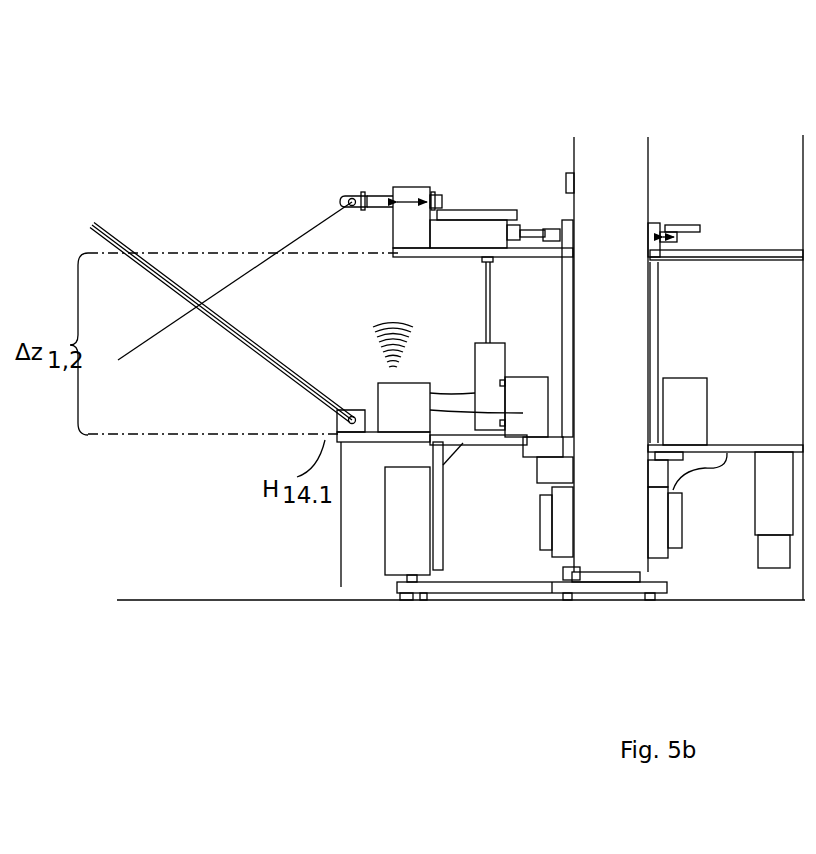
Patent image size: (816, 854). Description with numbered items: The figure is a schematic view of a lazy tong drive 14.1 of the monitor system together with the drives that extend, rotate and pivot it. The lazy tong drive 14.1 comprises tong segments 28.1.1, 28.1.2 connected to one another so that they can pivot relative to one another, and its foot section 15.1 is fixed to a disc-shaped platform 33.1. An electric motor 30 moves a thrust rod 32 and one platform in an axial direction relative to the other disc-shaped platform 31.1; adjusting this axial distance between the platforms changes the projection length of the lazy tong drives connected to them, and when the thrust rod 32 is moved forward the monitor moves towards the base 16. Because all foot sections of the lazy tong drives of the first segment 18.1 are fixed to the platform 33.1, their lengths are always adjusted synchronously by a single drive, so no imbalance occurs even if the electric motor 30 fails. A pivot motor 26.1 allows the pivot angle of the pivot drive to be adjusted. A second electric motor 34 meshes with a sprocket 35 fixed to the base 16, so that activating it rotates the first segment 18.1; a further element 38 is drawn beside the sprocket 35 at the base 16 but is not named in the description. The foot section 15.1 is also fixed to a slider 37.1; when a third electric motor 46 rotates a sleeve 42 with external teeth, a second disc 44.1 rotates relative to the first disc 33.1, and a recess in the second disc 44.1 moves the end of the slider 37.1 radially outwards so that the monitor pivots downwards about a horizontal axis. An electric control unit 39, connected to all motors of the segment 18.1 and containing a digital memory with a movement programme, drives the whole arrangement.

The lazy tong drive 14.1 is at (180, 155).
The foot section 15.1 is at (371, 156).
The base 16 is at (607, 178).
The first segment 18.1 is at (273, 600).
The pivot motor 26.1 is at (525, 175).
The tong segment 28.1.1 is at (277, 250).
The tong segment 28.1.2 is at (262, 357).
The electric motor 30 is at (490, 387).
The platform 31.1 is at (740, 452).
The thrust rod 32 is at (487, 295).
The platform 33.1 is at (405, 255).
The second electric motor 34 is at (395, 560).
The sprocket 35 is at (494, 593).
The slider 37.1 is at (452, 208).
The foot 38 is at (595, 593).
The electric control unit 39 is at (450, 407).
The sleeve 42 is at (652, 318).
The second disc 44.1 is at (678, 225).
The third electric motor 46 is at (528, 400).